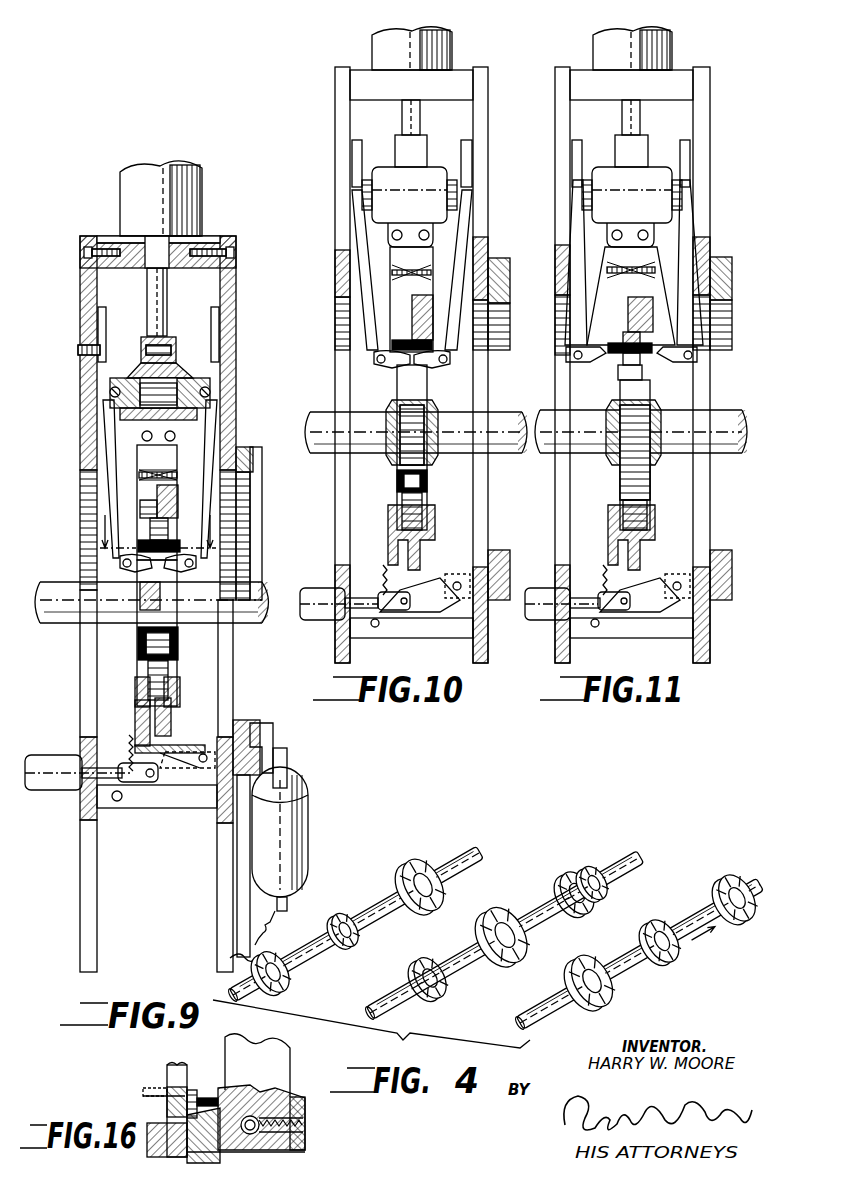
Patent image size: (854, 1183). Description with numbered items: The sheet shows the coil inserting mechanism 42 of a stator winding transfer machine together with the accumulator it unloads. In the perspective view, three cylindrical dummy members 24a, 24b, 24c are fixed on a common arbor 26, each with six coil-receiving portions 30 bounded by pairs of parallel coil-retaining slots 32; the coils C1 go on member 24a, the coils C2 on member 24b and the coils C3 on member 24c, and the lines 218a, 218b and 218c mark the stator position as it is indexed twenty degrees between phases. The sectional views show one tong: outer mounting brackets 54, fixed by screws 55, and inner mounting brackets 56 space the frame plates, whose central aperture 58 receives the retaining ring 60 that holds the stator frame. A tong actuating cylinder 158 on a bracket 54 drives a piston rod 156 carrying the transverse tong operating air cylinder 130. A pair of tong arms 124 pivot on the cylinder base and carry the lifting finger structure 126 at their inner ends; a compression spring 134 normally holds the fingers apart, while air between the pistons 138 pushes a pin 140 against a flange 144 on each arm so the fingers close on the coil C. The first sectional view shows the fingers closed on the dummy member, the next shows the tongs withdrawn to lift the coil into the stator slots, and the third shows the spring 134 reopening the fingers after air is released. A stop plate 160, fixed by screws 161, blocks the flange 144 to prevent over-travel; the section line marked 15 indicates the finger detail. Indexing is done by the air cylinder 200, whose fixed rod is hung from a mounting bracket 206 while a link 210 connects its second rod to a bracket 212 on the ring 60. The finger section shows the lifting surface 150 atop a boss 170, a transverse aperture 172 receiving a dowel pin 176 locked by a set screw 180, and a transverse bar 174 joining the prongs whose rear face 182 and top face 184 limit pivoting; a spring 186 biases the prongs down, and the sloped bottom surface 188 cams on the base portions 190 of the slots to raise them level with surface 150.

In FIG. 9, the coil inserting mechanism 42 is at (75, 238).
In FIG. 9, the outer mounting brackets 54 is at (205, 236).
In FIG. 9, the screws 55 is at (84, 253).
In FIG. 9, the inner mounting brackets 56 is at (138, 808).
In FIG. 9, the central aperture 58 is at (82, 468).
In FIG. 9, the retaining ring 60 is at (173, 720).
In FIG. 9, the tong arms 124 is at (186, 456).
In FIG. 10, the tong arms 124 is at (444, 292).
In FIG. 11, the tong arms 124 is at (666, 288).
In FIG. 16, the tong arms 124 is at (290, 1052).
In FIG. 9, the lifting finger structure 126 is at (132, 580).
In FIG. 10, the lifting finger structure 126 is at (380, 368).
In FIG. 11, the lifting finger structure 126 is at (578, 362).
In FIG. 16, the lifting finger structure 126 is at (193, 1065).
In FIG. 9, the tong operating air cylinder 130 is at (172, 348).
In FIG. 11, the tong operating air cylinder 130 is at (608, 155).
In FIG. 11, the compression spring 134 is at (632, 280).
In FIG. 9, the pistons 138 is at (120, 378).
In FIG. 9, the pin 140 is at (112, 388).
In FIG. 9, the flange 144 is at (103, 420).
In FIG. 10, the flange 144 is at (352, 220).
In FIG. 11, the flange 144 is at (634, 262).
In FIG. 9, the piston rod 156 is at (167, 300).
In FIG. 10, the piston rod 156 is at (420, 112).
In FIG. 11, the piston rod 156 is at (640, 115).
In FIG. 9, the tong actuating cylinder 158 is at (185, 190).
In FIG. 10, the tong actuating cylinder 158 is at (452, 45).
In FIG. 11, the tong actuating cylinder 158 is at (672, 45).
In FIG. 9, the stop plate 160 is at (98, 318).
In FIG. 10, the stop plate 160 is at (362, 150).
In FIG. 11, the stop plate 160 is at (582, 150).
In FIG. 9, the screws 161 is at (78, 349).
In FIG. 9, the section line 15 is at (158, 539).
In FIG. 9, the coil C is at (146, 538).
In FIG. 10, the coil C is at (402, 337).
In FIG. 9, the indexing cylinder 200 is at (308, 822).
In FIG. 9, the mounting bracket 206 is at (287, 904).
In FIG. 9, the link 210 is at (287, 758).
In FIG. 9, the bracket 212 is at (273, 733).
In FIG. 10, the dummy member 24a is at (392, 398).
In FIG. 4, the dummy member 24a is at (740, 922).
In FIG. 4, the dummy member 24b is at (678, 958).
In FIG. 4, the dummy member 24c is at (592, 1013).
In FIG. 4, the arbor 26 is at (470, 858).
In FIG. 4, the coil-receiving portions 30 is at (290, 986).
In FIG. 4, the coil-retaining slots 32 is at (590, 858).
In FIG. 4, the line 218a is at (424, 828).
In FIG. 4, the line 218b is at (518, 882).
In FIG. 4, the line 218c is at (630, 975).
In FIG. 4, the coils C1 is at (420, 870).
In FIG. 4, the coils C2 is at (347, 918).
In FIG. 4, the coils C3 is at (285, 966).
In FIG. 16, the lifting surface 150 is at (200, 1095).
In FIG. 16, the boss 170 is at (167, 1101).
In FIG. 16, the transverse aperture 172 is at (300, 1097).
In FIG. 16, the transverse bar 174 is at (167, 1118).
In FIG. 16, the dowel pin 176 is at (295, 1152).
In FIG. 16, the set screw 180 is at (305, 1125).
In FIG. 16, the rear face 182 is at (225, 1152).
In FIG. 16, the top face 184 is at (235, 1088).
In FIG. 16, the spring 186 is at (160, 1085).
In FIG. 16, the bottom surface 188 is at (203, 1135).
In FIG. 16, the base portions 190 is at (147, 1124).